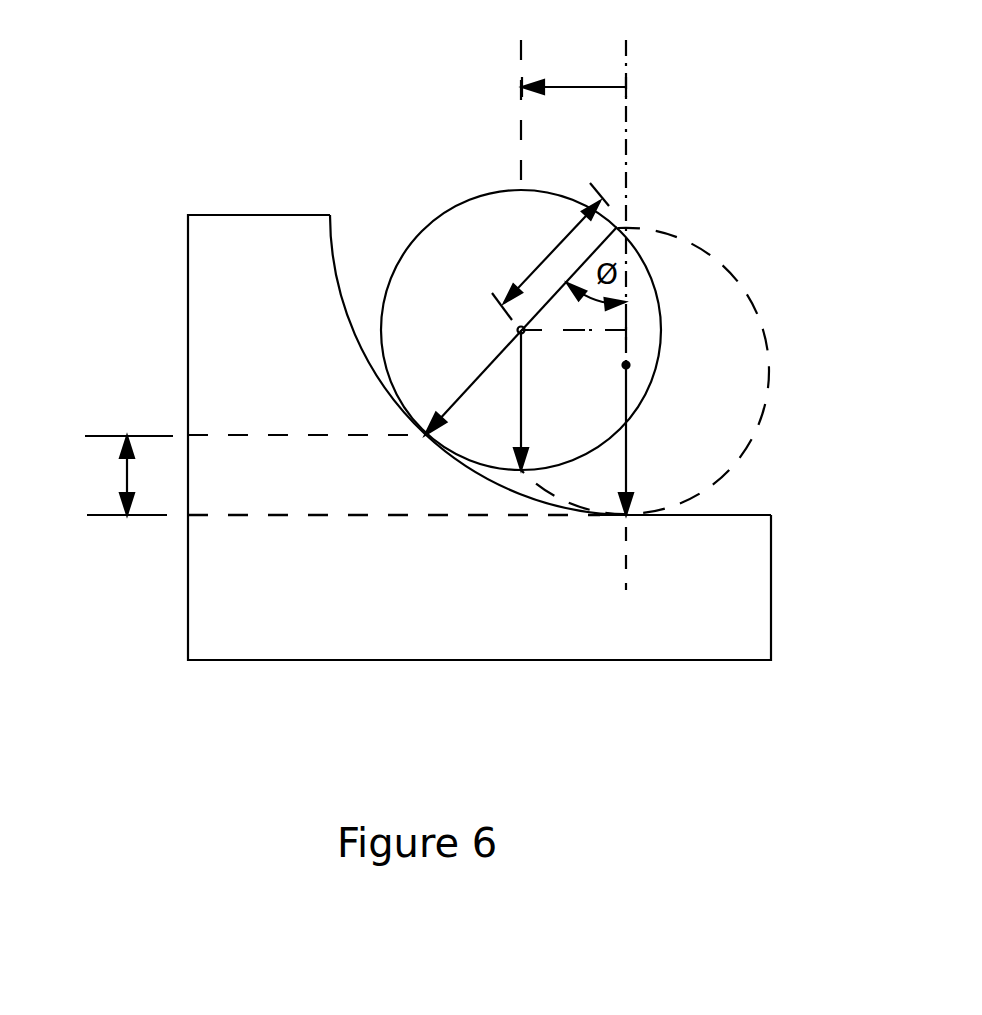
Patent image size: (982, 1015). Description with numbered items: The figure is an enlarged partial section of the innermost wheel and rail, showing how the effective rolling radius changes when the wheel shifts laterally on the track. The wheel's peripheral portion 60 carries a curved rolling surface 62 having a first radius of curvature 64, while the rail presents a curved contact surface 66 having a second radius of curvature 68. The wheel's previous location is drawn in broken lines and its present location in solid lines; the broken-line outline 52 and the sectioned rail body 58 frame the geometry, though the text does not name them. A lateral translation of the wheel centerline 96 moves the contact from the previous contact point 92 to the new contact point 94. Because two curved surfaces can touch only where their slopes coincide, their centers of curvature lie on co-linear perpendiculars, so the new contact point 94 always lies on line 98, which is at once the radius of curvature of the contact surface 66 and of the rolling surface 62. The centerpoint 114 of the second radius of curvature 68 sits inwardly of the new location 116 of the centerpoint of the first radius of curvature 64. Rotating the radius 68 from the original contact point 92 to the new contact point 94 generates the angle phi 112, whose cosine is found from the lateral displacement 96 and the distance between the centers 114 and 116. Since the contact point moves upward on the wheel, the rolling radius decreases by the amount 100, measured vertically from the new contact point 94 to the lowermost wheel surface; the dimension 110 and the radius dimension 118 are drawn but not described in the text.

The cutting tool 52 is at (803, 325).
The workpiece 58 is at (315, 612).
The peripheral portion 60 is at (630, 515).
The curved rolling surface 62 is at (423, 228).
The first radius of curvature 64 is at (517, 392).
The curved contact surface 66 is at (340, 268).
The second radius of curvature 68 is at (630, 458).
The previous contact point 92 is at (622, 514).
The new contact point 94 is at (424, 437).
The lateral translation of the wheel centerline 96 is at (578, 83).
The co-linear radius of curvature line 98 is at (474, 379).
The decrease in rolling radius 100 is at (127, 480).
The bottom point 110 is at (520, 472).
The angle phi 112 is at (588, 331).
The centerpoint of the second radius of curvature 114 is at (618, 227).
The centerpoint of the first radius of curvature 116 is at (515, 329).
The radius 118 is at (545, 258).